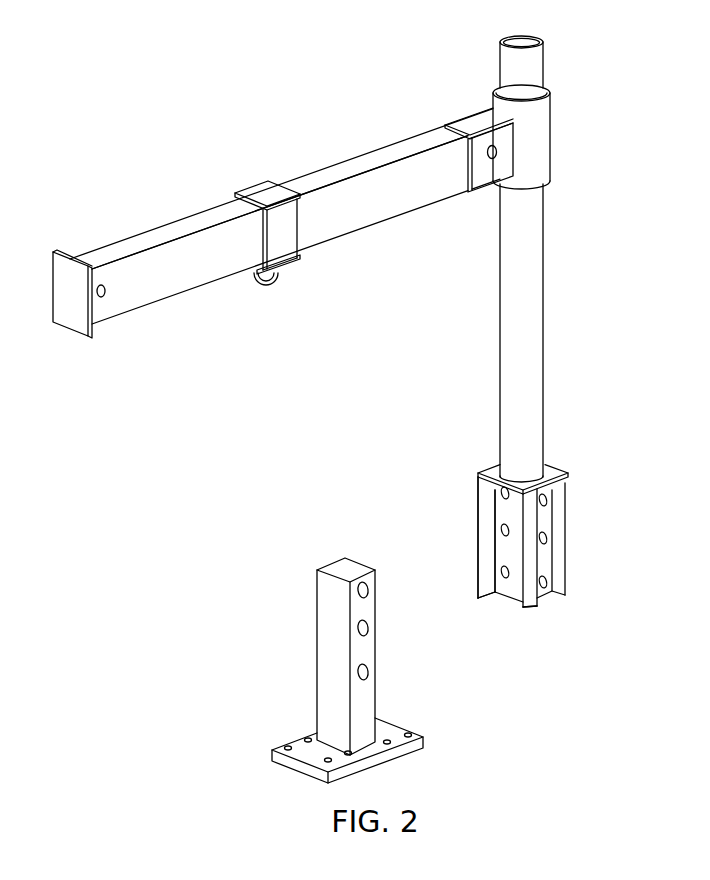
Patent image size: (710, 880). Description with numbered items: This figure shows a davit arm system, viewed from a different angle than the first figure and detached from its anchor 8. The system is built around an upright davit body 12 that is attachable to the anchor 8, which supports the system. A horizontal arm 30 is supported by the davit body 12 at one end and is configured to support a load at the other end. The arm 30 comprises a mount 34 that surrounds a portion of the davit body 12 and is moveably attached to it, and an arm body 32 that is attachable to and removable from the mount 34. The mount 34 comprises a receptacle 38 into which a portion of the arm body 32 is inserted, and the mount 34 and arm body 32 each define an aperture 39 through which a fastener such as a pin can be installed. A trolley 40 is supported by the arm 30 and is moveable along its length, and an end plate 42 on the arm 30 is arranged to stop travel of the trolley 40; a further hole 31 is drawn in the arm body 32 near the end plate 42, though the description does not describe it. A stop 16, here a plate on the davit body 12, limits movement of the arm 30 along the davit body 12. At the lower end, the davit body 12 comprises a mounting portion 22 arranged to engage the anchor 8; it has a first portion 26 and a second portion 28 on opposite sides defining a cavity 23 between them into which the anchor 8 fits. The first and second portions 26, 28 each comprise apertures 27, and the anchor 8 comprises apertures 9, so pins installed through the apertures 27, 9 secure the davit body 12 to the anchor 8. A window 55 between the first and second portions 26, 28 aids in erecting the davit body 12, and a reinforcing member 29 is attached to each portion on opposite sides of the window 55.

The anchor 8 is at (316, 682).
The apertures 9 is at (368, 589).
The davit body 12 is at (545, 288).
The stop 16 is at (553, 474).
The mounting portion 22 is at (549, 571).
The cavity 23 is at (508, 597).
The first portion 26 is at (500, 557).
The apertures 27 is at (500, 492).
The second portion 28 is at (549, 563).
The reinforcing member 29 is at (482, 595).
The arm 30 is at (343, 160).
The arm hole 31 is at (102, 298).
The arm body 32 is at (397, 150).
The mount 34 is at (552, 130).
The receptacle 38 is at (473, 122).
The aperture 39 is at (492, 160).
The trolley 40 is at (253, 181).
The end plate 42 is at (67, 330).
The window 55 is at (451, 537).